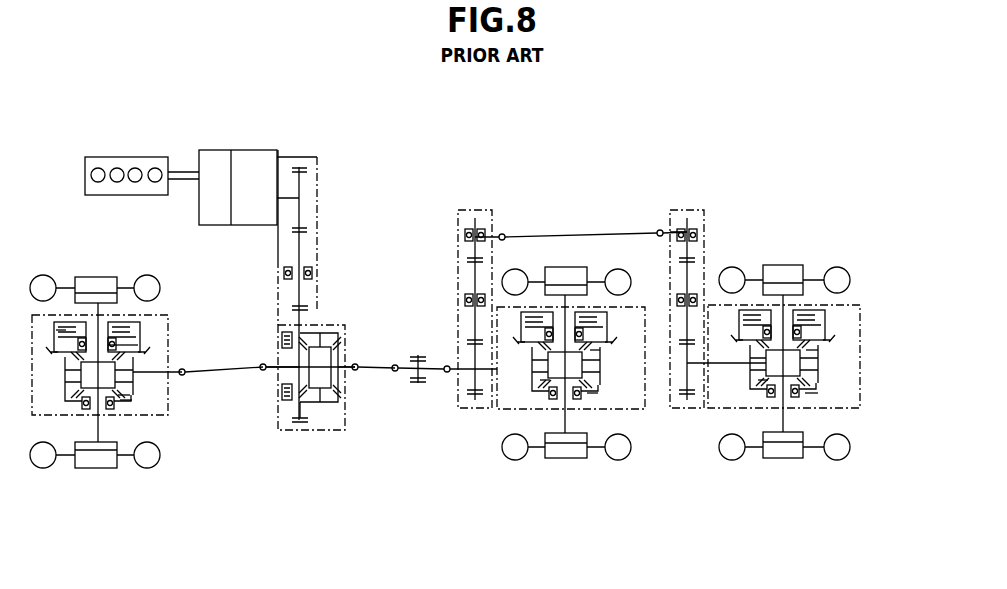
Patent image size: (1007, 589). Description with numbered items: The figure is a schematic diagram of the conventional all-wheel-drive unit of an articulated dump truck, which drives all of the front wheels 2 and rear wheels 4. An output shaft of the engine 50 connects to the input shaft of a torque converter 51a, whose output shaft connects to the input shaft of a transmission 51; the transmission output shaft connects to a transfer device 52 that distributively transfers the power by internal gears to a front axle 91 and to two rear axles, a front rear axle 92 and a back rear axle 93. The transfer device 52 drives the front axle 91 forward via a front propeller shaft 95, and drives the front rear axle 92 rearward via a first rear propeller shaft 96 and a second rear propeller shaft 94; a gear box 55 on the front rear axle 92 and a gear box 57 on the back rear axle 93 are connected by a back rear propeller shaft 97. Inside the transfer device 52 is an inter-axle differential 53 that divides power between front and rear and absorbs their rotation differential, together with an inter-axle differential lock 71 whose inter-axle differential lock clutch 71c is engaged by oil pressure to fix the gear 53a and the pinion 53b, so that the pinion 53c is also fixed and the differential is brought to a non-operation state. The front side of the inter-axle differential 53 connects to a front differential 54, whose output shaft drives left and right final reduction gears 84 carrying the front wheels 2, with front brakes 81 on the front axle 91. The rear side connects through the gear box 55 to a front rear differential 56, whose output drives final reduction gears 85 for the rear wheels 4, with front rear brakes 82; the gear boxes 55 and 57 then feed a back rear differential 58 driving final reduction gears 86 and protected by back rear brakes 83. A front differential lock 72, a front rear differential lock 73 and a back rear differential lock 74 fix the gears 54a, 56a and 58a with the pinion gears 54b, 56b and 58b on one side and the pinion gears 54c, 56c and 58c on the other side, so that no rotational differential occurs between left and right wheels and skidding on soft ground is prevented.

The front wheels 2 is at (44, 275).
The rear wheels 4 is at (512, 268).
The engine 50 is at (100, 157).
The transmission 51 is at (248, 150).
The torque converter 51a is at (208, 150).
The transfer device 52 is at (298, 162).
The inter-axle differential 53 is at (348, 432).
The gear of the inter-axle differential 53a is at (328, 420).
The pinion gear of the inter-axle differential 53b is at (300, 367).
The pinion gear of the inter-axle differential 53c is at (343, 372).
The front differential 54 is at (165, 388).
The gear of the front differential 54a is at (122, 395).
The pinion gear of the front differential 54b is at (132, 345).
The pinion gear of the front differential 54c is at (130, 402).
The gear box 55 is at (476, 213).
The front rear differential 56 is at (636, 410).
The gear of the front rear differential 56a is at (596, 396).
The pinion gear of the front rear differential 56b is at (598, 350).
The pinion gear of the front rear differential 56c is at (545, 380).
The gear box 57 is at (687, 213).
The back rear differential 58 is at (852, 408).
The gear of the back rear differential 58a is at (815, 393).
The pinion gear of the back rear differential 58b is at (815, 350).
The pinion gear of the back rear differential 58c is at (762, 380).
The inter-axle differential lock 71 is at (290, 330).
The inter-axle differential lock clutch 71c is at (290, 340).
The front differential lock 72 is at (140, 322).
The front rear differential lock 73 is at (520, 328).
The back rear differential lock 74 is at (822, 325).
The front brakes 81 is at (124, 288).
The front rear brakes 82 is at (590, 282).
The back rear brakes 83 is at (812, 280).
The final reduction gears 84 is at (90, 277).
The final reduction gears 85 is at (570, 267).
The final reduction gears 86 is at (786, 265).
The front axle 91 is at (140, 466).
The front rear axle 92 is at (642, 512).
The back rear axle 93 is at (852, 485).
The second rear propeller shaft 94 is at (418, 390).
The front propeller shaft 95 is at (262, 375).
The first rear propeller shaft 96 is at (375, 372).
The back rear propeller shaft 97 is at (620, 233).